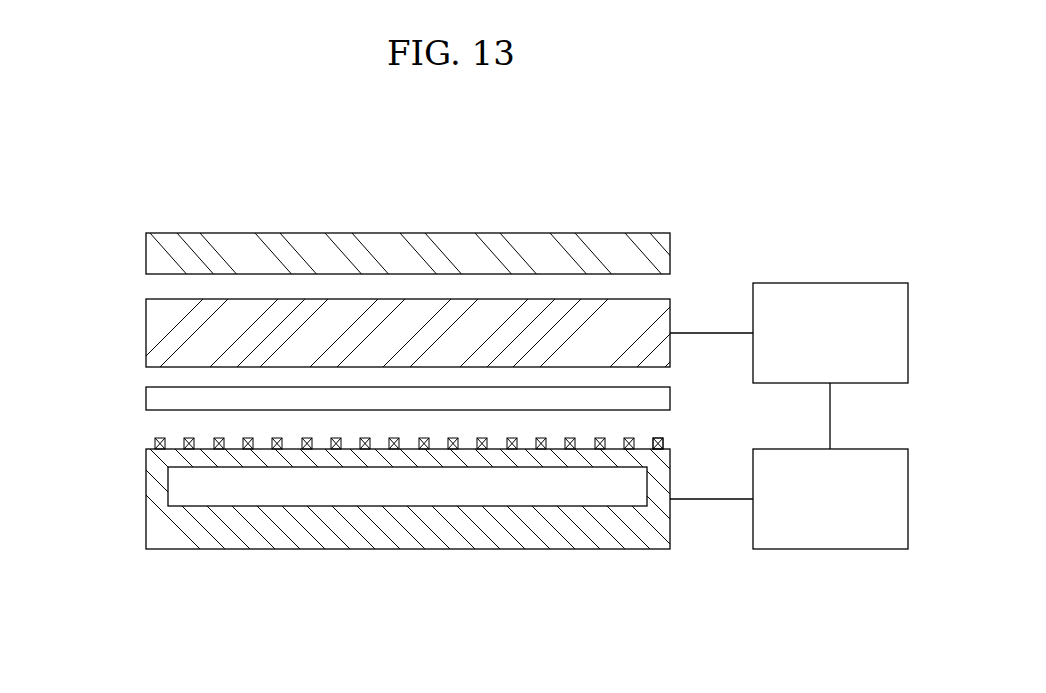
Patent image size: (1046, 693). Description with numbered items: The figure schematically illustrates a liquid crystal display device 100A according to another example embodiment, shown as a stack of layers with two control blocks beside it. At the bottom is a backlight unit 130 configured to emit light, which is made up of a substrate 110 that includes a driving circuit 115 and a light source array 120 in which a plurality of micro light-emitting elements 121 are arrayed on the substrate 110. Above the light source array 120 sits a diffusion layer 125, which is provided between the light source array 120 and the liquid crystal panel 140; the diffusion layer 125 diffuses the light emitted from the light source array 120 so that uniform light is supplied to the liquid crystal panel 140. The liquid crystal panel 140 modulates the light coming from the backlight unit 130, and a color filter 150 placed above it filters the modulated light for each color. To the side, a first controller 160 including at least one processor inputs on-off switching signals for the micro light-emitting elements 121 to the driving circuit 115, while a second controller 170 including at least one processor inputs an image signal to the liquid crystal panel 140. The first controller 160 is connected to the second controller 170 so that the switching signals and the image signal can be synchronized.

The liquid crystal display device 100A is at (792, 180).
The substrate 110 is at (410, 530).
The driving circuit 115 is at (358, 493).
The light source array 120 is at (150, 443).
The micro light-emitting element 121 is at (664, 438).
The diffusion layer 125 is at (146, 398).
The backlight unit 130 is at (62, 440).
The liquid crystal panel 140 is at (146, 334).
The color filter 150 is at (146, 255).
The first controller 160 is at (830, 549).
The second controller 170 is at (830, 283).